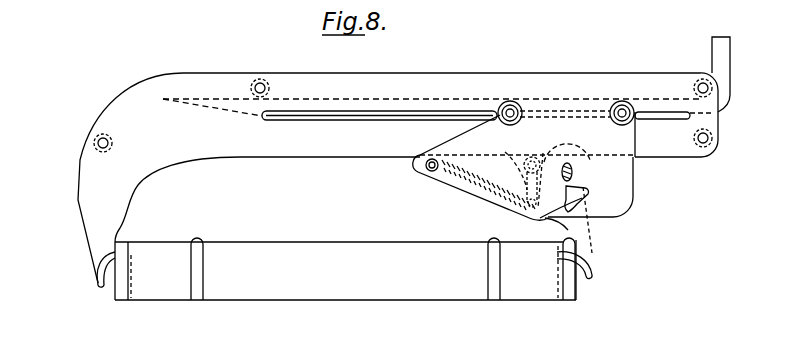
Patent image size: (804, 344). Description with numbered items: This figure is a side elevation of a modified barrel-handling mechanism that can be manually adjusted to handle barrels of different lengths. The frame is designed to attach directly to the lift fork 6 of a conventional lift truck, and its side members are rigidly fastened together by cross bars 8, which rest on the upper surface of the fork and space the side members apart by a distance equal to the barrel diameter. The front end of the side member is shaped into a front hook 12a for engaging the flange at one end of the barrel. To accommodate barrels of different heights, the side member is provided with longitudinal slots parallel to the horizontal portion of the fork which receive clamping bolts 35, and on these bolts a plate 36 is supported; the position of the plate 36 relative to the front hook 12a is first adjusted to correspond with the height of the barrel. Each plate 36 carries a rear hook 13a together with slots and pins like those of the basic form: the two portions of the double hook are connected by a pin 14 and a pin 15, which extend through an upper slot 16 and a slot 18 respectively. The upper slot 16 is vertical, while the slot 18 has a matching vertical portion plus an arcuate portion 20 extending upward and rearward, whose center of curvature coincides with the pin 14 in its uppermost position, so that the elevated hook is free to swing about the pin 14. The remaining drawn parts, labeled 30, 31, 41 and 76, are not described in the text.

The lift fork 6 is at (730, 63).
The cross bars 8 is at (95, 141).
The front hook 12a is at (97, 283).
The rear hook 13a is at (588, 257).
The pin 14 is at (587, 166).
The pin 15 is at (585, 227).
The upper slot 16 is at (564, 167).
The slot 18 is at (543, 219).
The arcuate portion 20 is at (597, 198).
The bracket plate 30 is at (511, 163).
The toothed sector 31 is at (467, 200).
The clamping bolts 35 is at (512, 102).
The plate 36 is at (628, 172).
The slot 41 is at (446, 111).
The arm 76 is at (388, 73).